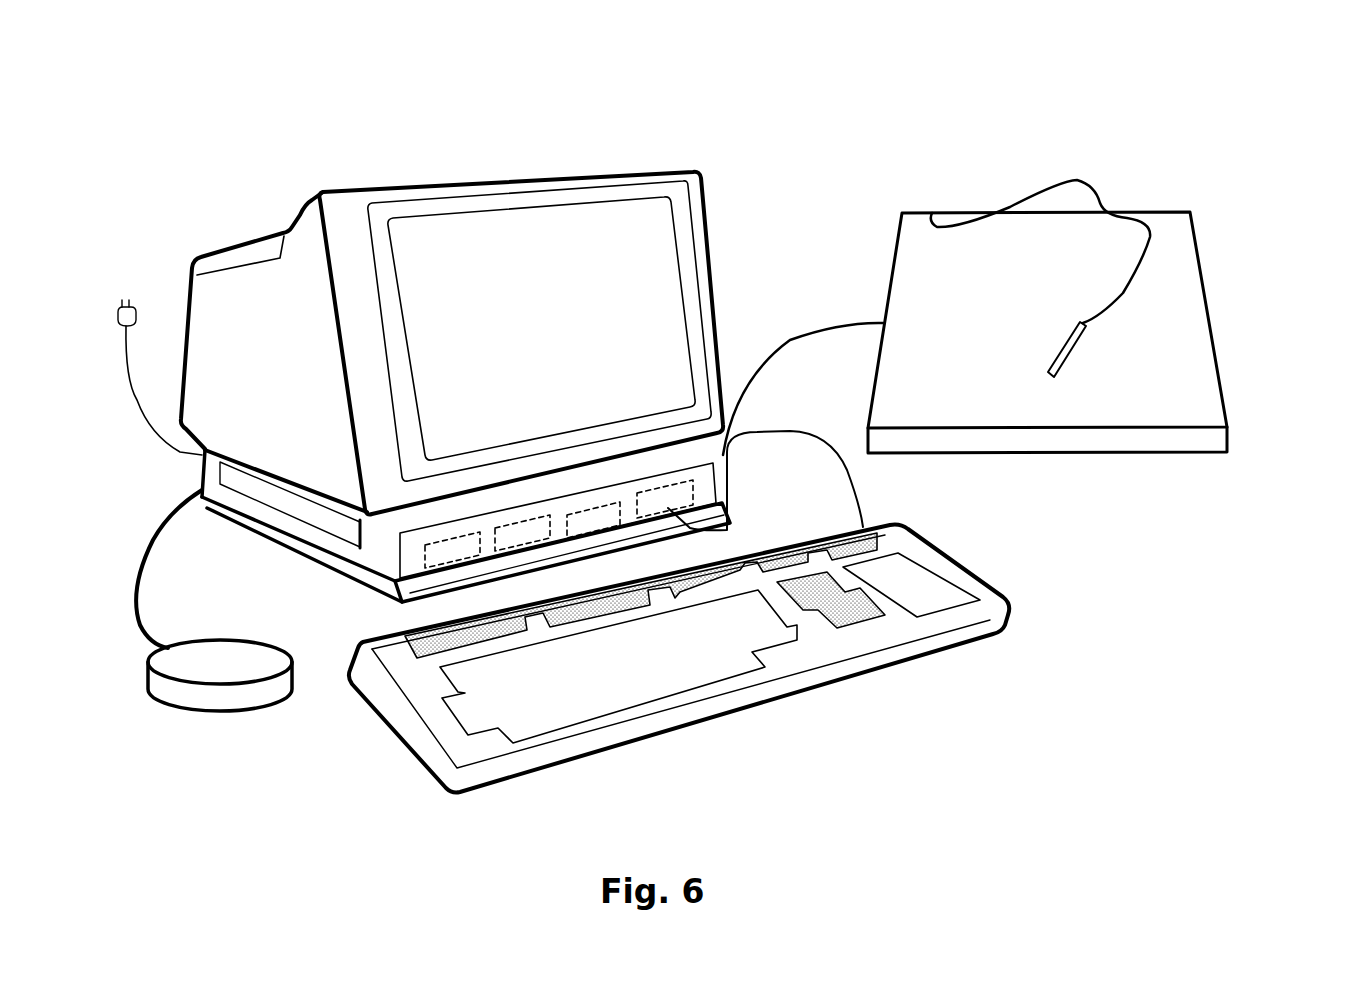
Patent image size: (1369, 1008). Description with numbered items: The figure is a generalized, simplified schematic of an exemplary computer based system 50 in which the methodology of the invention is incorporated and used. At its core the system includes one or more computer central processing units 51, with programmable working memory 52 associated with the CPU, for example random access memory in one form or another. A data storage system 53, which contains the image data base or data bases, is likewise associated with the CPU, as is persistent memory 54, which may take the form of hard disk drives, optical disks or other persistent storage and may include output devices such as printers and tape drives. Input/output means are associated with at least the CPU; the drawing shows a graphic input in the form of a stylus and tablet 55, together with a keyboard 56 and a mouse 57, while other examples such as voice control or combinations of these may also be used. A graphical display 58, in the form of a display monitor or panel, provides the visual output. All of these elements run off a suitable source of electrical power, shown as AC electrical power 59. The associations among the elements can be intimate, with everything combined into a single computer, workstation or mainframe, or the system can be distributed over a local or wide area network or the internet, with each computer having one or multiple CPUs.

The computer based system 50 is at (934, 89).
The computer central processing unit 51 is at (757, 530).
The programmable working memory 52 is at (623, 517).
The data storage system 53 is at (432, 553).
The persistent memory 54 is at (512, 528).
The stylus and tablet 55 is at (1260, 138).
The keyboard 56 is at (990, 620).
The mouse 57 is at (243, 690).
The graphical display 58 is at (537, 273).
The AC electrical power 59 is at (136, 323).